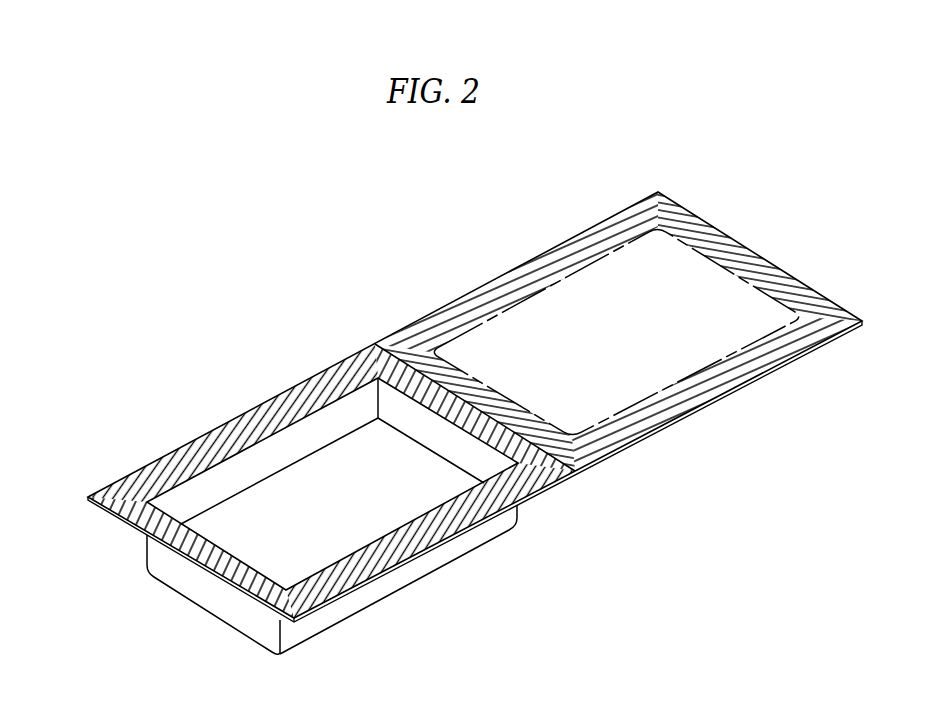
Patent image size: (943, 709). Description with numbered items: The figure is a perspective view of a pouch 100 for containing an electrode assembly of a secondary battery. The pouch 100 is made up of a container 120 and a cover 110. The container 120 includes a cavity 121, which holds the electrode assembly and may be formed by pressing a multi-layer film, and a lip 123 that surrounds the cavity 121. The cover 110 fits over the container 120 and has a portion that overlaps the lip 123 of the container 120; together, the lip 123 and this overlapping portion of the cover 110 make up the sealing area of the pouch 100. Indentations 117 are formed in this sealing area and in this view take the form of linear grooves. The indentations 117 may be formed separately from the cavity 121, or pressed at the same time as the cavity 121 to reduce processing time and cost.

The pouch 100 is at (300, 326).
The cover 110 is at (520, 308).
The indentations 117 is at (453, 519).
The container 120 is at (222, 597).
The cavity 121 is at (318, 546).
The lip 123 is at (140, 509).